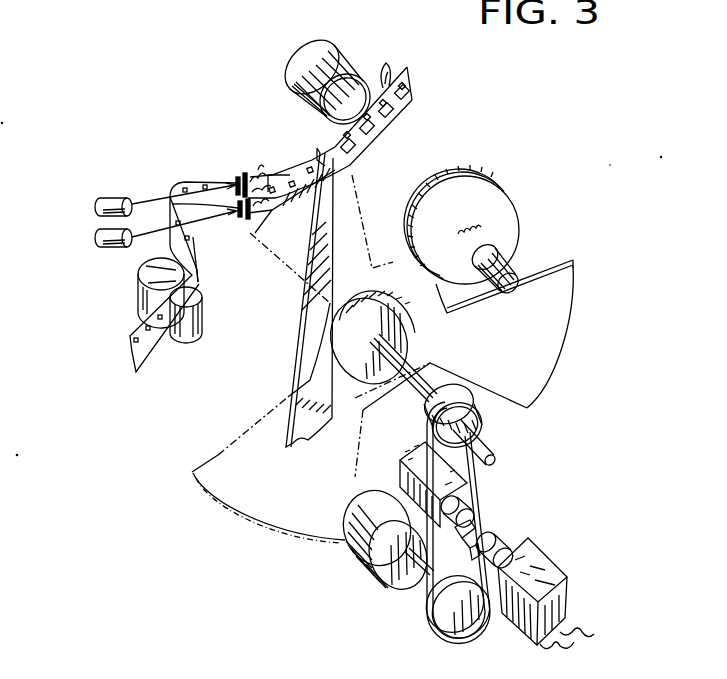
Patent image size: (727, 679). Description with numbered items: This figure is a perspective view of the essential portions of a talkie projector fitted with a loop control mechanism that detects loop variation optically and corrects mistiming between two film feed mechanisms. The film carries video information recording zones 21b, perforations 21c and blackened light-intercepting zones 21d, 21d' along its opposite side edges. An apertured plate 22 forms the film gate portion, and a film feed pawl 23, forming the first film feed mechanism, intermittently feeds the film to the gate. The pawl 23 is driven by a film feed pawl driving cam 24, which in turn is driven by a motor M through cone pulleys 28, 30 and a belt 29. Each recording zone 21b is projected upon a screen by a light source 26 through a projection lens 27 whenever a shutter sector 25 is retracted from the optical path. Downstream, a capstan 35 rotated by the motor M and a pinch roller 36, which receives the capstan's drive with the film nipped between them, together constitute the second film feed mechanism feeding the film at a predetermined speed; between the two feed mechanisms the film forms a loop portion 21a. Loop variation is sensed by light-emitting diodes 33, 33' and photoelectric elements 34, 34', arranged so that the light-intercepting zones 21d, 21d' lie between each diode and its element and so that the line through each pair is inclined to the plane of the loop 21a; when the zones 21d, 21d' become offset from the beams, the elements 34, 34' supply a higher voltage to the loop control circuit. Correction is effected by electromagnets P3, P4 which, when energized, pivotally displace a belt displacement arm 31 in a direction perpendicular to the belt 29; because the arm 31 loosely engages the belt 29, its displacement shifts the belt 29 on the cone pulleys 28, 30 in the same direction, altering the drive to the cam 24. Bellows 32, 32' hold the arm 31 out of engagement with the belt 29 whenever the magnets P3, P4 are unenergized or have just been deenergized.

The loop portion 21a is at (203, 169).
The video information recording zones 21b is at (405, 88).
The perforations 21c is at (392, 82).
The light-intercepting zone 21d is at (375, 97).
The light-intercepting zone 21d' is at (373, 137).
The apertured plate 22 is at (278, 176).
The film feed pawl 23 is at (336, 196).
The film feed pawl driving cam 24 is at (400, 315).
The shutter sector 25 is at (570, 300).
The light source 26 is at (502, 205).
The projection lens 27 is at (300, 91).
The cone pulley 28 is at (442, 615).
The belt 29 is at (480, 518).
The cone pulley 30 is at (465, 400).
The belt displacement arm 31 is at (482, 530).
The bellows 32 is at (526, 550).
The bellows 32' is at (483, 503).
The light-emitting diode 33 is at (159, 182).
The light-emitting diode 33' is at (132, 231).
The photoelectric element 34 is at (244, 164).
The photoelectric element 34' is at (240, 232).
The capstan 35 is at (203, 317).
The pinch roller 36 is at (145, 288).
The motor M is at (352, 553).
The electromagnet P3 is at (560, 573).
The electromagnet P4 is at (420, 460).